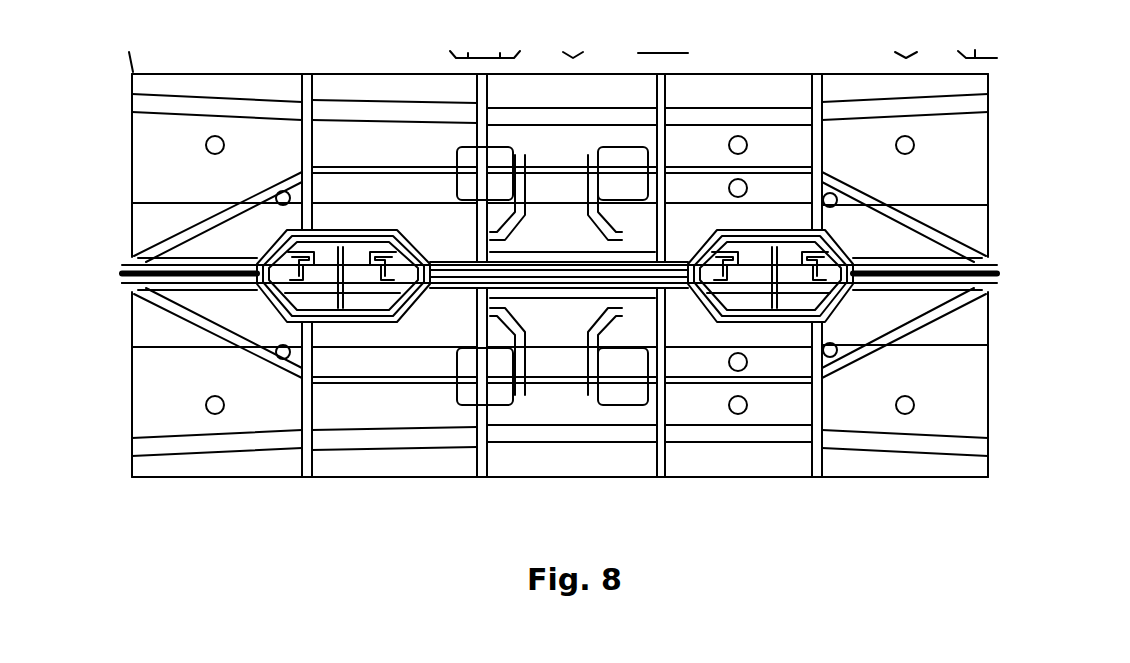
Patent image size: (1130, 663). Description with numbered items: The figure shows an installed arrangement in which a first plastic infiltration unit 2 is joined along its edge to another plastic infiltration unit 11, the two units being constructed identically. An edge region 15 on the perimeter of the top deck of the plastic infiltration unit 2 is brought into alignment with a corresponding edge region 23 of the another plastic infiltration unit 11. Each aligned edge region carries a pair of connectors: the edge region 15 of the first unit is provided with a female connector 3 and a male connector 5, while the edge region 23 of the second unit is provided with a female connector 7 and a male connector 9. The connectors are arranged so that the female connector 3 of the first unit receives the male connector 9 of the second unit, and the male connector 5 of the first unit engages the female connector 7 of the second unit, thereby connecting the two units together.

The plastic infiltration unit 2 is at (990, 117).
The another plastic infiltration unit 11 is at (990, 392).
The edge region 15 is at (913, 270).
The edge region 23 is at (207, 284).
The male connector 5 is at (343, 382).
The female connector 7 is at (357, 317).
The female connector 3 is at (770, 382).
The male connector 9 is at (788, 288).